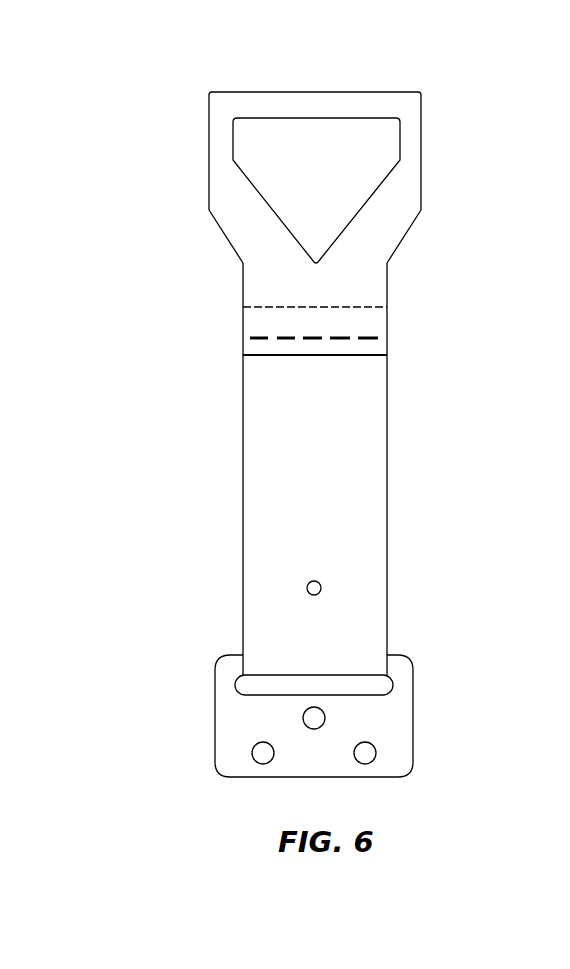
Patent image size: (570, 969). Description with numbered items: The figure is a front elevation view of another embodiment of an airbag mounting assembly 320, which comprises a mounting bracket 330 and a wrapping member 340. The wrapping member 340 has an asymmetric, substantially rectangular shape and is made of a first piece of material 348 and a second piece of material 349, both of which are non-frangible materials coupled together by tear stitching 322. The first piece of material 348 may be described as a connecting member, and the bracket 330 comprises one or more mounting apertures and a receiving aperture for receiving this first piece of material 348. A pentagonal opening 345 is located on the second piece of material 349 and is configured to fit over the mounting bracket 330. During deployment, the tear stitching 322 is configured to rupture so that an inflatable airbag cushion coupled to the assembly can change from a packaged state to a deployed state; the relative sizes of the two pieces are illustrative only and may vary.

The mounting assembly 320 is at (232, 76).
The wrapping member 340 is at (203, 249).
The opening 345 is at (383, 149).
The second piece of material 349 is at (387, 237).
The tear stitching 322 is at (343, 341).
The first piece of material 348 is at (262, 493).
The mounting bracket 330 is at (395, 714).